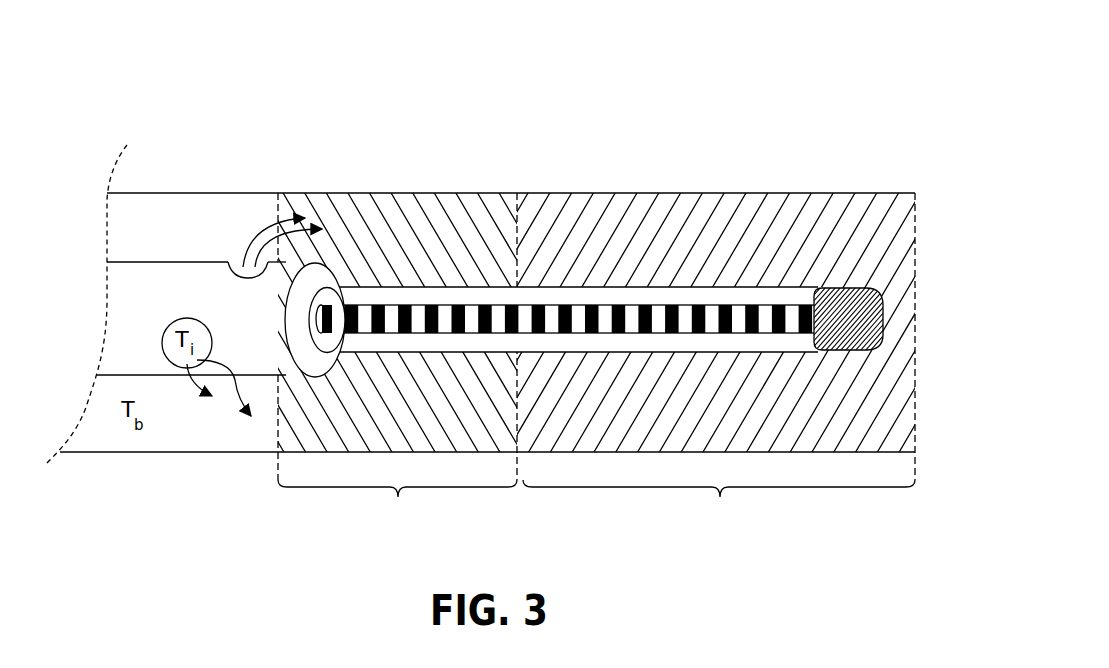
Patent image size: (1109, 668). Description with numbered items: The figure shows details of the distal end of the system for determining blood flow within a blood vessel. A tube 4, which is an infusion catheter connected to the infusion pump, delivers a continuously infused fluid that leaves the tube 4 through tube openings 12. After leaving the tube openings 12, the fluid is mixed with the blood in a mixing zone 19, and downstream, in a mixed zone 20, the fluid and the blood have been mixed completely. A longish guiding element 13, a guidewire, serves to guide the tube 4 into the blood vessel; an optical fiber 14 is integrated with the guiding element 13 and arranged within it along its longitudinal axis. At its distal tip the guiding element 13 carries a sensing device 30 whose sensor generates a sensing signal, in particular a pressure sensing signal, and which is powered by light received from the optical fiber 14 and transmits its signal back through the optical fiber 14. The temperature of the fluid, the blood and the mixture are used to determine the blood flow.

The tube 4 is at (105, 377).
The tube openings 12 is at (236, 255).
The guiding element 13 is at (640, 285).
The optical fiber 14 is at (750, 333).
The mixing zone 19 is at (397, 507).
The mixed zone 20 is at (719, 507).
The sensing device 30 is at (886, 318).